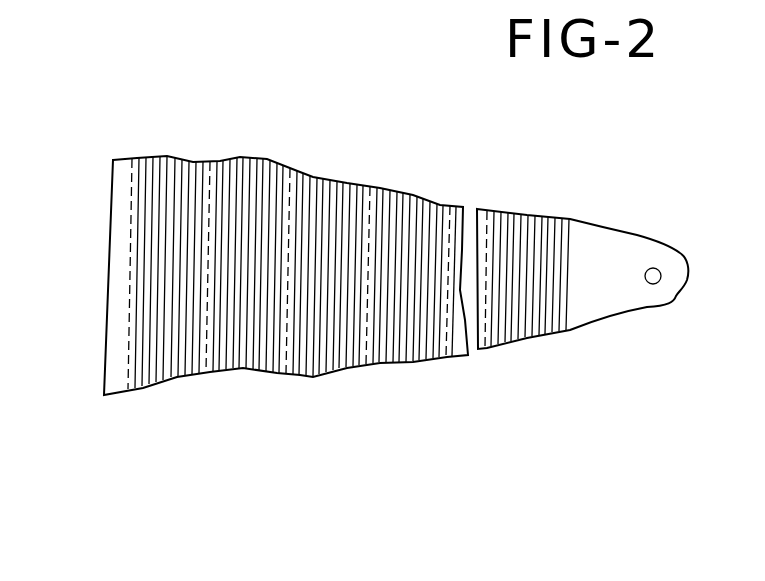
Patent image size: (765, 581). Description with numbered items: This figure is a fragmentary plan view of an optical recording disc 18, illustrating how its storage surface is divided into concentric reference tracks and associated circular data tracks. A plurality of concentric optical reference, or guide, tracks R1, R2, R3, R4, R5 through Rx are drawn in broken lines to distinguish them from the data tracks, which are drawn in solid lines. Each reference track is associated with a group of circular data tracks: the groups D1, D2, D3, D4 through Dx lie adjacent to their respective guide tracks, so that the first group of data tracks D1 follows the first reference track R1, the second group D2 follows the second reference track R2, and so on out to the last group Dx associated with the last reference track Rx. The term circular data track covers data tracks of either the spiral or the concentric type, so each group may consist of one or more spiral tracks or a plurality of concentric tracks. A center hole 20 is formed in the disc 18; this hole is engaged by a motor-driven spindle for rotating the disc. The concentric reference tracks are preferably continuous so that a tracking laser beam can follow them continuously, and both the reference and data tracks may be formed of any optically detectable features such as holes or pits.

The optical recording disc 18 is at (104, 298).
The center hole 20 is at (648, 284).
The concentric optical reference track R1 is at (140, 162).
The concentric optical reference track R2 is at (219, 158).
The concentric optical reference track R3 is at (300, 170).
The concentric optical reference track R4 is at (375, 185).
The concentric optical reference track R5 is at (463, 200).
The concentric optical reference track Rx is at (497, 207).
The group of circular data tracks D1 is at (215, 156).
The group of circular data tracks D2 is at (298, 165).
The group of circular data tracks D3 is at (376, 181).
The group of circular data tracks D4 is at (455, 200).
The group of circular data tracks Dx is at (505, 205).